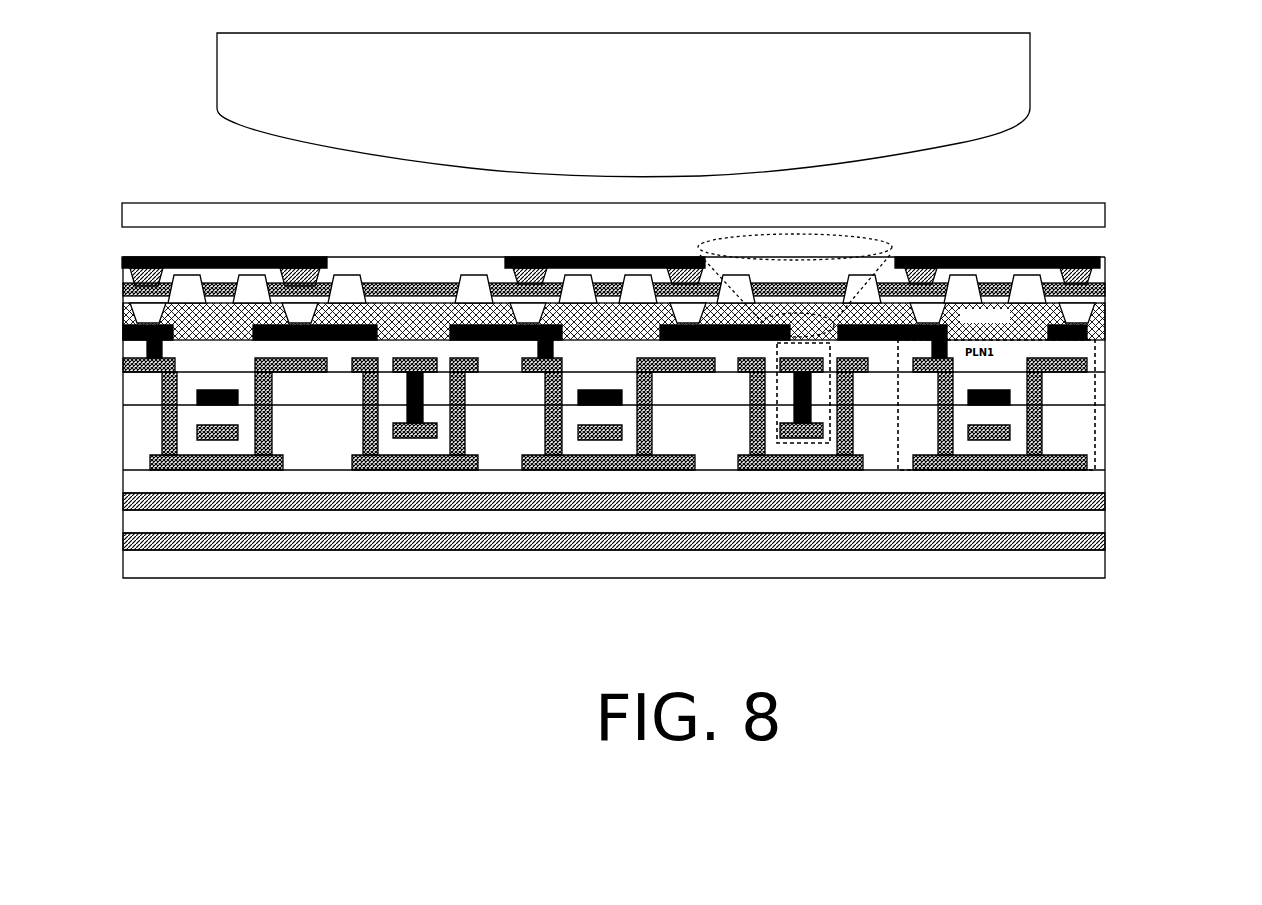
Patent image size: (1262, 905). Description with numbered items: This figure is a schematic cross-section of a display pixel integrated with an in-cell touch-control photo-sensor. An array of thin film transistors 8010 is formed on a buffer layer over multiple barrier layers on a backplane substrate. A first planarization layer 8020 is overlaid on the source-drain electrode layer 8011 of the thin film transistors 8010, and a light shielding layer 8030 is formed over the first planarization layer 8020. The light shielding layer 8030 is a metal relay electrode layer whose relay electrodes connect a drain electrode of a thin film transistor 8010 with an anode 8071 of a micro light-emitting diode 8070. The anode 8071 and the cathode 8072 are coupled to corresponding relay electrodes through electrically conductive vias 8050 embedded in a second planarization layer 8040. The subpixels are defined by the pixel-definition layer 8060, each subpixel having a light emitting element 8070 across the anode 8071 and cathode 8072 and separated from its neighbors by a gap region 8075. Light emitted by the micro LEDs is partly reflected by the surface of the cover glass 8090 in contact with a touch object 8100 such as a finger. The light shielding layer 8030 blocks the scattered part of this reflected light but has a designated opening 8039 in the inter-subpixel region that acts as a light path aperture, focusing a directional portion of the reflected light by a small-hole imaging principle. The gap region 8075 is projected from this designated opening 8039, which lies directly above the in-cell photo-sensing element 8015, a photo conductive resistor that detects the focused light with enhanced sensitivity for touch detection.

The touch object 8100 is at (1030, 80).
The cover glass 8090 is at (1100, 210).
The cathode 8072 is at (1118, 258).
The light emitting element 8070 is at (1045, 256).
The anode 8071 is at (877, 258).
The gap region 8075 is at (798, 250).
The pixel-definition layer 8060 is at (475, 280).
The electrically conductive vias 8050 is at (1068, 296).
The second planarization layer 8040 is at (1098, 312).
The light shielding layer 8030 is at (1083, 330).
The first planarization layer 8020 is at (1100, 355).
The source-drain electrode layer 8011 is at (1088, 363).
The thin film transistors 8010 is at (1097, 393).
The designated opening 8039 is at (777, 345).
The in-cell photo-sensing element 8015 is at (807, 443).